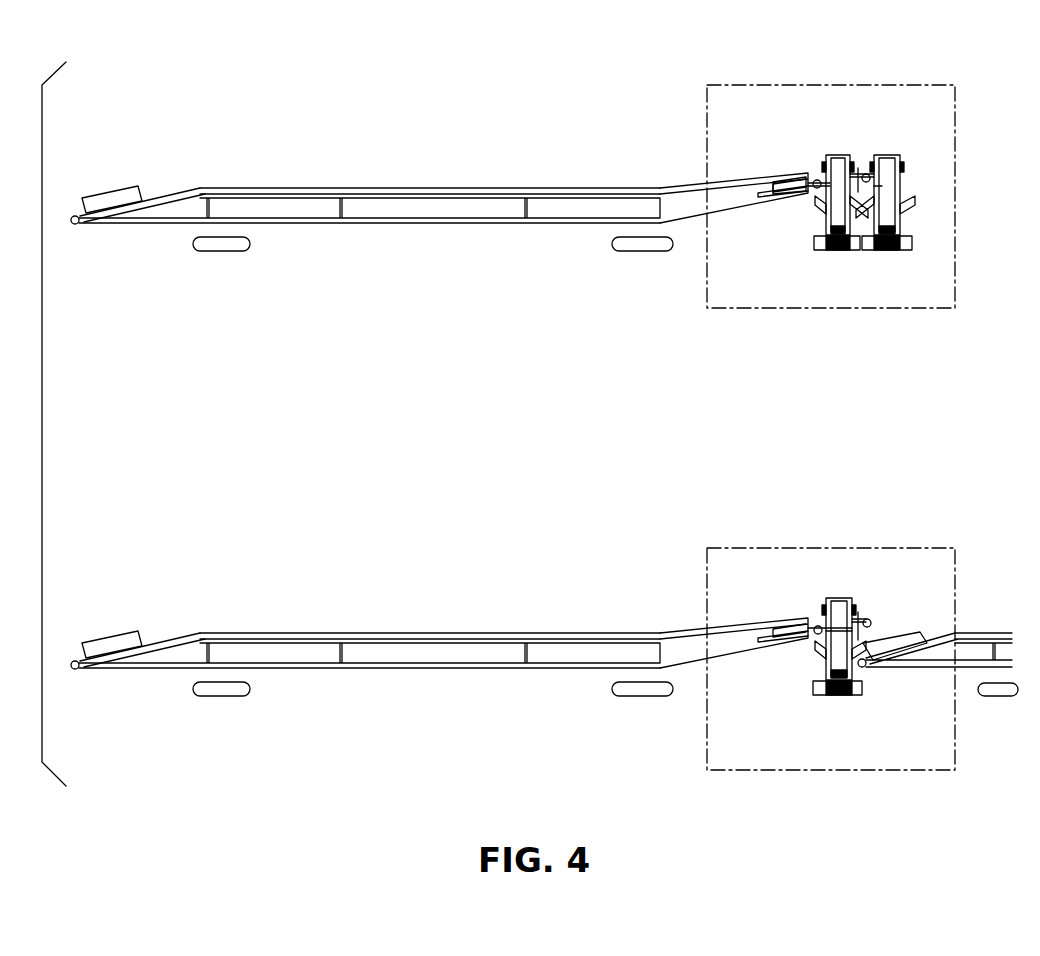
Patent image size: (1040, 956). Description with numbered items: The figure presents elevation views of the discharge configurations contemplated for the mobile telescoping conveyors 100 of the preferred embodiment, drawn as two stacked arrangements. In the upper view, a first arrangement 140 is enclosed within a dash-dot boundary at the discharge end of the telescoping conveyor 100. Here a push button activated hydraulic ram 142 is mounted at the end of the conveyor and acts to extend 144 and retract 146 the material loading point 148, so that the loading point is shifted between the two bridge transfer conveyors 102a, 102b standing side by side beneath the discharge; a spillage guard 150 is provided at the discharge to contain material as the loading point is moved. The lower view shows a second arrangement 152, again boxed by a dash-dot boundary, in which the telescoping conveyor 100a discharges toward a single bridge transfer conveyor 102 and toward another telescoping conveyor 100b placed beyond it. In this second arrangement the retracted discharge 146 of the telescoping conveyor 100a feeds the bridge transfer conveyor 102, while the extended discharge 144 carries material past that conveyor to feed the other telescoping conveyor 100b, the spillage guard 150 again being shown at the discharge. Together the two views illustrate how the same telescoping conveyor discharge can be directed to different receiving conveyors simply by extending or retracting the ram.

The mobile telescoping conveyor 100 is at (432, 226).
The telescoping conveyor 100a is at (428, 672).
The telescoping conveyor 100b is at (930, 674).
The bridge transfer conveyor 102 is at (835, 697).
The bridge transfer conveyor 102a is at (837, 252).
The bridge transfer conveyor 102b is at (889, 252).
The arrangement 140 is at (815, 332).
The hydraulic ram 142 is at (768, 190).
The extended discharge 144 is at (858, 166).
The retracted discharge 146 is at (810, 168).
The material loading point 148 is at (864, 223).
The spillage guard 150 is at (878, 188).
The second arrangement 152 is at (822, 645).